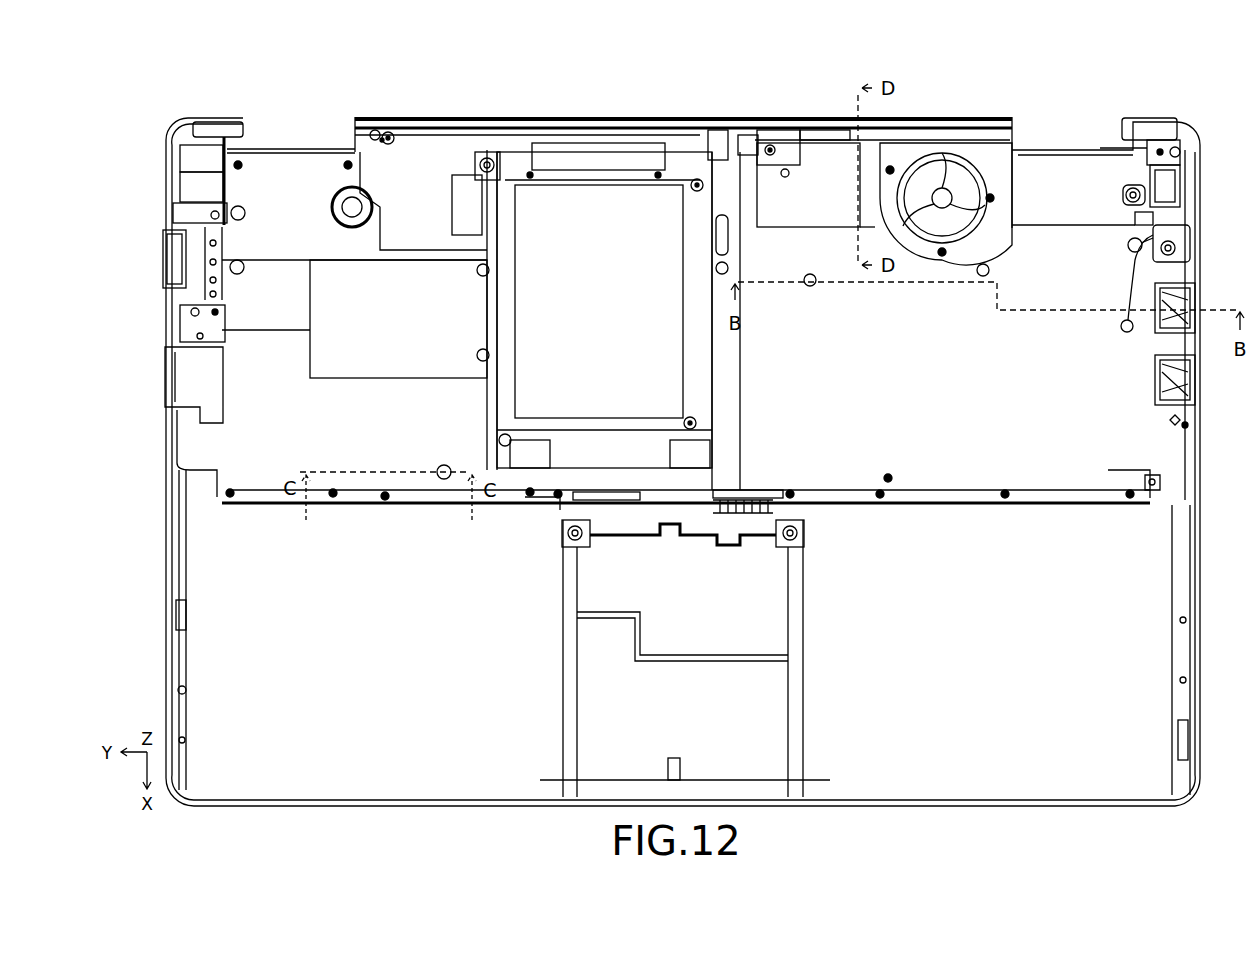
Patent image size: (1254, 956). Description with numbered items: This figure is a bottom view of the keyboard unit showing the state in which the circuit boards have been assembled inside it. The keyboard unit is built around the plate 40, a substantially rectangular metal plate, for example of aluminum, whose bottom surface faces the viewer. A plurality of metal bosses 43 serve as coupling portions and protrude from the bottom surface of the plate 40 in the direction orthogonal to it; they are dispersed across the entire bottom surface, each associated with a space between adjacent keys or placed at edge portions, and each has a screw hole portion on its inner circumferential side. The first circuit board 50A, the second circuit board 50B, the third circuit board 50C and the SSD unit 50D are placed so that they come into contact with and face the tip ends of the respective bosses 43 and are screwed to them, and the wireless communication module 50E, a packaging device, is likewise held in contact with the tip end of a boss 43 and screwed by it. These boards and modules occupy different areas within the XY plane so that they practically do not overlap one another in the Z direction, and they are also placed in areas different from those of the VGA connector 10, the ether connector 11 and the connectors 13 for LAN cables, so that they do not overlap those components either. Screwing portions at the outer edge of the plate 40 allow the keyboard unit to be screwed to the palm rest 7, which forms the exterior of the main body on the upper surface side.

The palm rest 7 is at (1200, 604).
The VGA connector 10 is at (170, 265).
The ether connector 11 is at (182, 380).
The connectors 13 is at (1198, 295).
The plate 40 is at (170, 492).
The bosses 43 is at (178, 328).
The first circuit board 50A is at (1072, 230).
The second circuit board 50B is at (290, 290).
The third circuit board 50C is at (422, 200).
The SSD unit 50D is at (600, 225).
The wireless communication module 50E is at (795, 170).